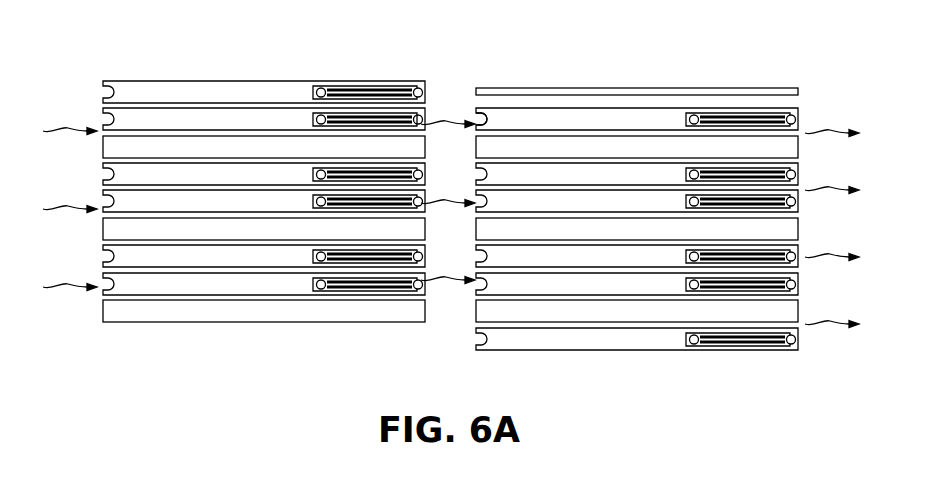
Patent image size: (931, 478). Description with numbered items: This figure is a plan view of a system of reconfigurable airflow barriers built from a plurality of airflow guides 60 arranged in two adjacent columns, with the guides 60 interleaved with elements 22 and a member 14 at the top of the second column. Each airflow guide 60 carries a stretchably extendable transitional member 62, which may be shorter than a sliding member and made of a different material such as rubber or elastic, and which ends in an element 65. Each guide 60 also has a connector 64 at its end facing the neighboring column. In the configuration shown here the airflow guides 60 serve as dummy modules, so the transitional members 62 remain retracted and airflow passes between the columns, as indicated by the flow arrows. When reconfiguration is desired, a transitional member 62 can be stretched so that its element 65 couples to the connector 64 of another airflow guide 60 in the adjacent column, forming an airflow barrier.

The cover plate 14 is at (686, 88).
The spacer bar 22 is at (630, 319).
The airflow guide 60 is at (276, 81).
The stretchably extendable transitional member 62 is at (355, 90).
The connector 64 is at (483, 121).
The element 65 is at (421, 119).